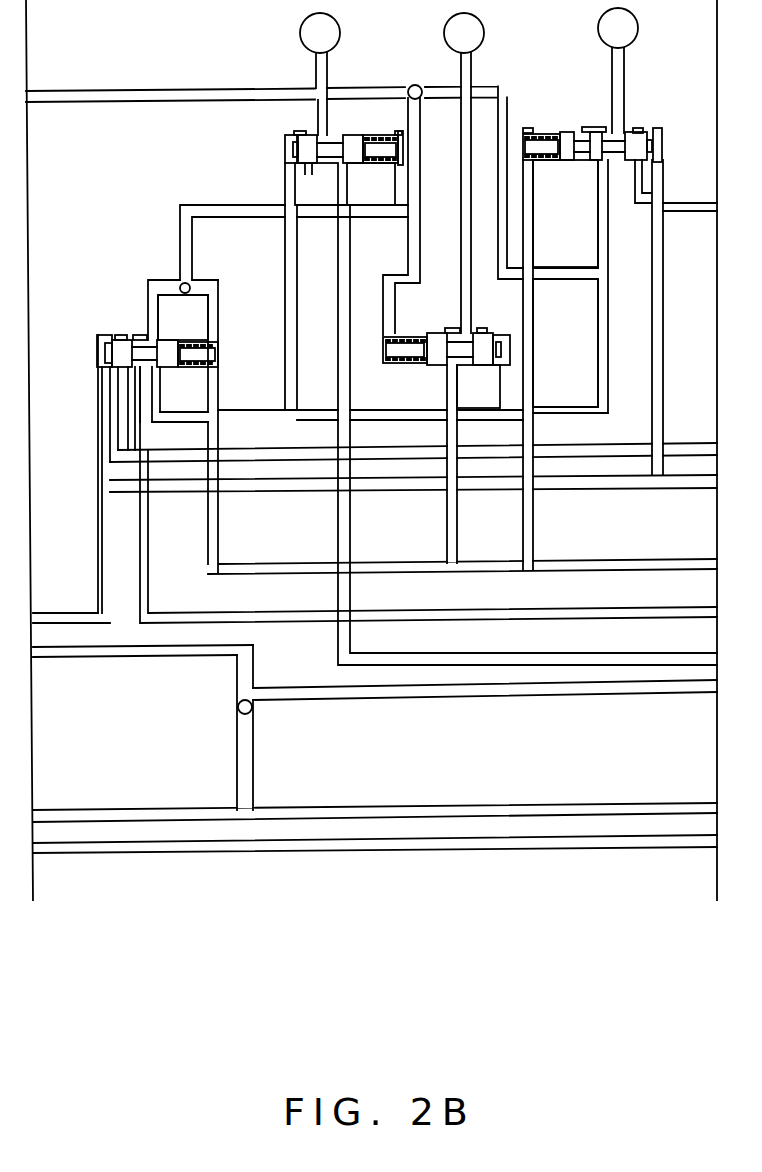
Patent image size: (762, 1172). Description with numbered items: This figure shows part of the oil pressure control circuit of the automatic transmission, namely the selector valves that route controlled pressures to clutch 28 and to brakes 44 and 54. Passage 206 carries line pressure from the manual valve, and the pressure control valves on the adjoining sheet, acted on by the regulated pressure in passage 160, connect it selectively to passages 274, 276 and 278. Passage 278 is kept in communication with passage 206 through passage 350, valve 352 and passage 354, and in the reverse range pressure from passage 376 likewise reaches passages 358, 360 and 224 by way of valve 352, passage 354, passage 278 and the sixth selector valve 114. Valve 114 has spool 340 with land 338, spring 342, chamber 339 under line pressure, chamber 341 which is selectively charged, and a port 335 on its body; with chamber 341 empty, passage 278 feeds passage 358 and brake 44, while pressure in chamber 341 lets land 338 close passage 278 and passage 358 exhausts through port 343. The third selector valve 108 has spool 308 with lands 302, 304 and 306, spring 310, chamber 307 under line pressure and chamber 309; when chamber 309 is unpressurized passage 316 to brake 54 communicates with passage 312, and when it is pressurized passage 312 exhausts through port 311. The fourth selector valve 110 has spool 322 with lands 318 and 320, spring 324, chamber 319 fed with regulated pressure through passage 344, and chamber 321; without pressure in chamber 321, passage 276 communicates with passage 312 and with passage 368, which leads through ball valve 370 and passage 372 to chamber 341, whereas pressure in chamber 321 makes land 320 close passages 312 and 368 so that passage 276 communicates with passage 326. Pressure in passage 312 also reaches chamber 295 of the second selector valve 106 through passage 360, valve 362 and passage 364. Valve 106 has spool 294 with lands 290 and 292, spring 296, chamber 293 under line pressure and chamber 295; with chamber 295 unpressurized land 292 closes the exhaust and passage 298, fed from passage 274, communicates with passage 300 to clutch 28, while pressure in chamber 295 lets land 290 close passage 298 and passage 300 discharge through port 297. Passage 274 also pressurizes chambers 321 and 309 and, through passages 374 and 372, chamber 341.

The oil passage 224 is at (133, 89).
The oil passage 358 is at (314, 73).
The oil passage 350 is at (254, 780).
The valve 362 is at (415, 84).
The brake 44 is at (340, 33).
The clutch 28 is at (484, 33).
The brake 54 is at (636, 24).
The oil passage 316 is at (627, 70).
The land 302 is at (562, 130).
The oil pressure chamber 309 is at (525, 128).
The land 304 is at (602, 127).
The land 306 is at (637, 128).
The third selector valve 108 is at (672, 126).
The oil pressure chamber 307 is at (661, 148).
The sixth selector valve 114 is at (278, 144).
The port 335 is at (299, 131).
The land 338 is at (353, 133).
The oil pressure chamber 341 is at (398, 112).
The oil pressure chamber 339 is at (285, 153).
The port 343 is at (300, 175).
The spring 342 is at (373, 164).
The spool 340 is at (330, 174).
The port 311 is at (582, 164).
The spring 310 is at (544, 175).
The oil passage 312 is at (609, 348).
The spool 308 is at (640, 203).
The oil passage 360 is at (565, 267).
The ball valve 370 is at (170, 278).
The oil passage 372 is at (540, 531).
The oil passage 278 is at (334, 250).
The oil passage 364 is at (410, 226).
The oil passage 300 is at (460, 219).
The oil passage 374 is at (220, 300).
The land 318 is at (122, 333).
The spool 322 is at (138, 333).
The fourth selector valve 110 is at (92, 350).
The oil passage 368 is at (173, 314).
The oil pressure chamber 321 is at (200, 346).
The oil pressure chamber 319 is at (102, 363).
The land 320 is at (166, 367).
The spring 324 is at (190, 368).
The land 290 is at (430, 336).
The spool 294 is at (452, 327).
The land 292 is at (482, 328).
The oil pressure chamber 293 is at (503, 345).
The port 297 is at (502, 366).
The second selector valve 106 is at (372, 369).
The oil pressure chamber 295 is at (394, 368).
The spring 296 is at (416, 368).
The oil passage 326 is at (232, 439).
The oil passage 276 is at (150, 524).
The oil passage 274 is at (226, 543).
The oil passage 344 is at (403, 491).
The oil passage 298 is at (454, 525).
The oil passage 376 is at (97, 660).
The valve 352 is at (237, 689).
The oil passage 354 is at (470, 700).
The oil passage 206 is at (529, 805).
The oil passage 160 is at (427, 857).